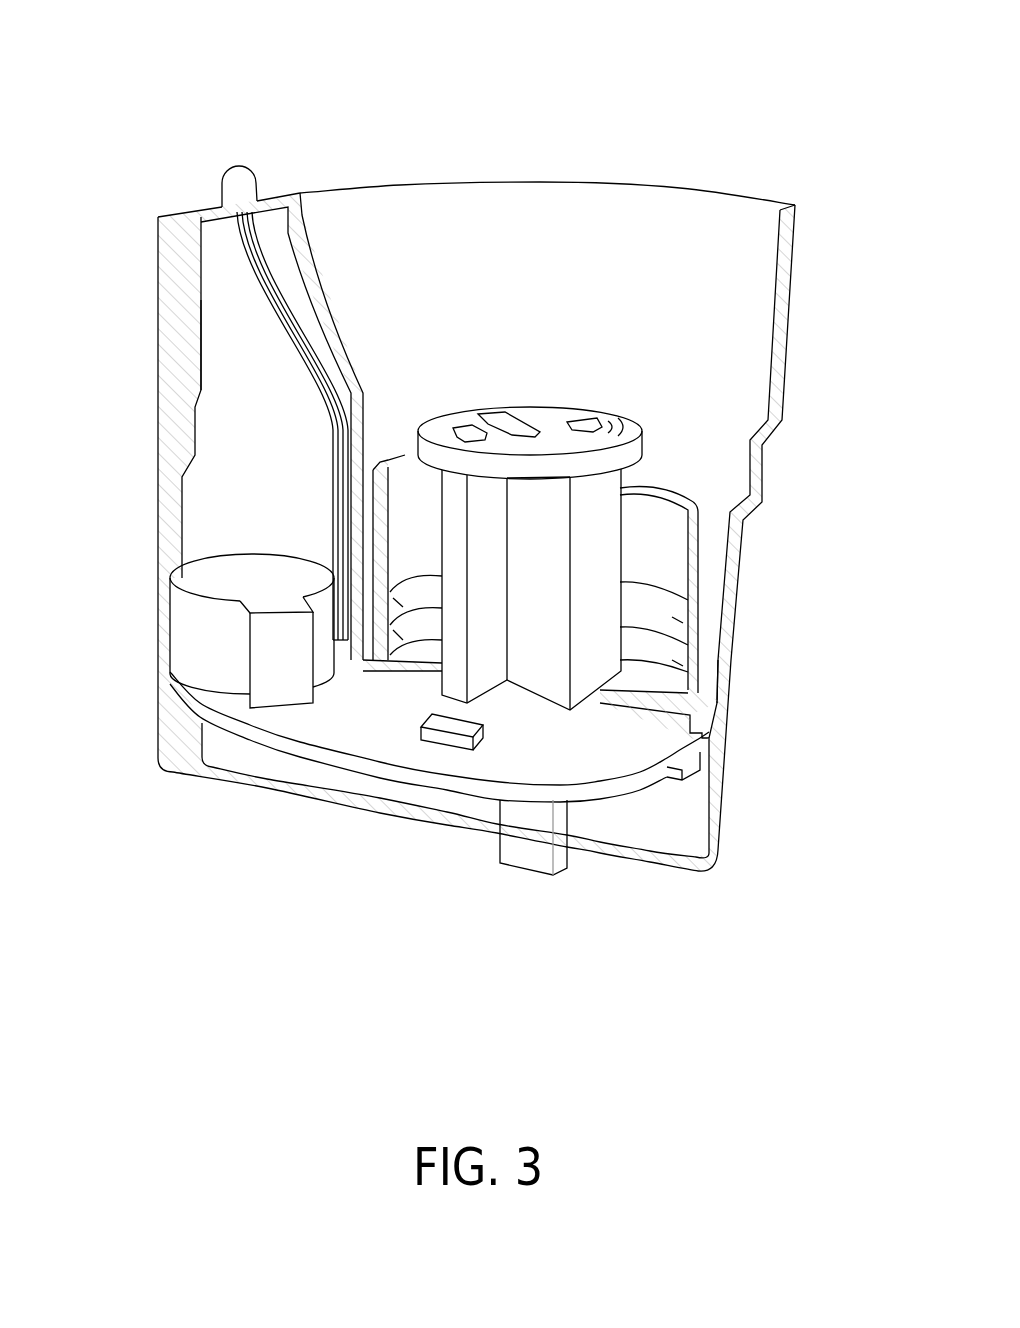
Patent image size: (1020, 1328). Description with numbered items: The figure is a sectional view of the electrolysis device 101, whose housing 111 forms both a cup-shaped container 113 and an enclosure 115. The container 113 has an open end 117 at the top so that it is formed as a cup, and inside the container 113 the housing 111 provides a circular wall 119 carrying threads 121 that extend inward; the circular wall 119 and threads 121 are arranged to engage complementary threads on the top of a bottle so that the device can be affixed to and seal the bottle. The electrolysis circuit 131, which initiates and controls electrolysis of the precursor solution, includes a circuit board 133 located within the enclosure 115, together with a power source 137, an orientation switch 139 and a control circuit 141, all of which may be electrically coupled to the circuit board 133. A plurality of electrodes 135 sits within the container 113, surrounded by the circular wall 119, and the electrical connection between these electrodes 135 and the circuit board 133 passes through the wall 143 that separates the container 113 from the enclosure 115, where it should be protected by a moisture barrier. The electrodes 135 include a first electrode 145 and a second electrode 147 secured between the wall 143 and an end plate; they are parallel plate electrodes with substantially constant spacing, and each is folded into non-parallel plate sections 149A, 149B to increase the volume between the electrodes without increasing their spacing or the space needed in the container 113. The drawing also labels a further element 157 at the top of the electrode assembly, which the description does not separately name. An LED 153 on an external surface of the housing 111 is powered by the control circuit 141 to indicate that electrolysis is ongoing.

The electrolysis device 101 is at (563, 100).
The housing 111 is at (180, 232).
The container 113 is at (756, 208).
The enclosure 115 is at (240, 320).
The open end 117 is at (712, 180).
The circular wall 119 is at (703, 573).
The threads 121 is at (680, 673).
The electrolysis circuit 131 is at (347, 710).
The circuit board 133 is at (392, 775).
The plurality of electrodes 135 is at (605, 552).
The power source 137 is at (210, 627).
The orientation switch 139 is at (538, 848).
The control circuit 141 is at (450, 737).
The wall 143 is at (636, 703).
The first electrode 145 is at (440, 513).
The second electrode 147 is at (467, 490).
The non-parallel plate section 149A is at (542, 513).
The non-parallel plate section 149B is at (660, 490).
The LED 153 is at (250, 167).
The fan hub 157 is at (600, 495).